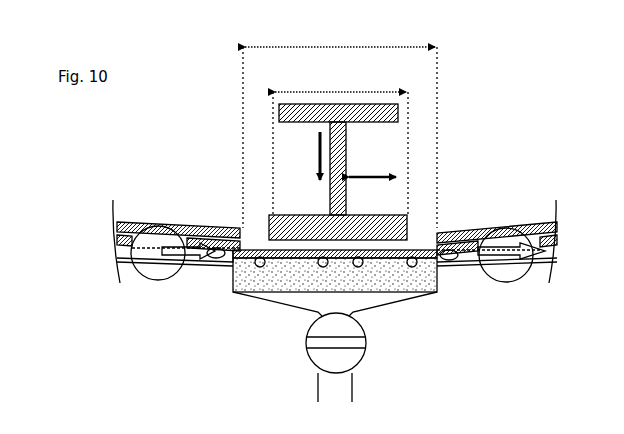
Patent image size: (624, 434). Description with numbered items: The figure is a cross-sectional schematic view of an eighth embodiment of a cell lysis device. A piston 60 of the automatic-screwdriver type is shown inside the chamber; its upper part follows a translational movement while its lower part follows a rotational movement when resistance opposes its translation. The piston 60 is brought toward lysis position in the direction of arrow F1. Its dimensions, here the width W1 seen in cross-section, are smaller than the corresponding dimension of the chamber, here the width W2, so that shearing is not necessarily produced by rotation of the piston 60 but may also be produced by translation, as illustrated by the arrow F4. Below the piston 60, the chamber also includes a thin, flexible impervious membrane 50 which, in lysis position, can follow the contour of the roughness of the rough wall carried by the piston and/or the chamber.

The impervious membrane 50 is at (197, 227).
The piston 60 is at (350, 142).
The arrow F1 is at (310, 152).
The arrow F4 is at (375, 178).
The width of the piston W1 is at (340, 84).
The width of the chamber W2 is at (340, 39).